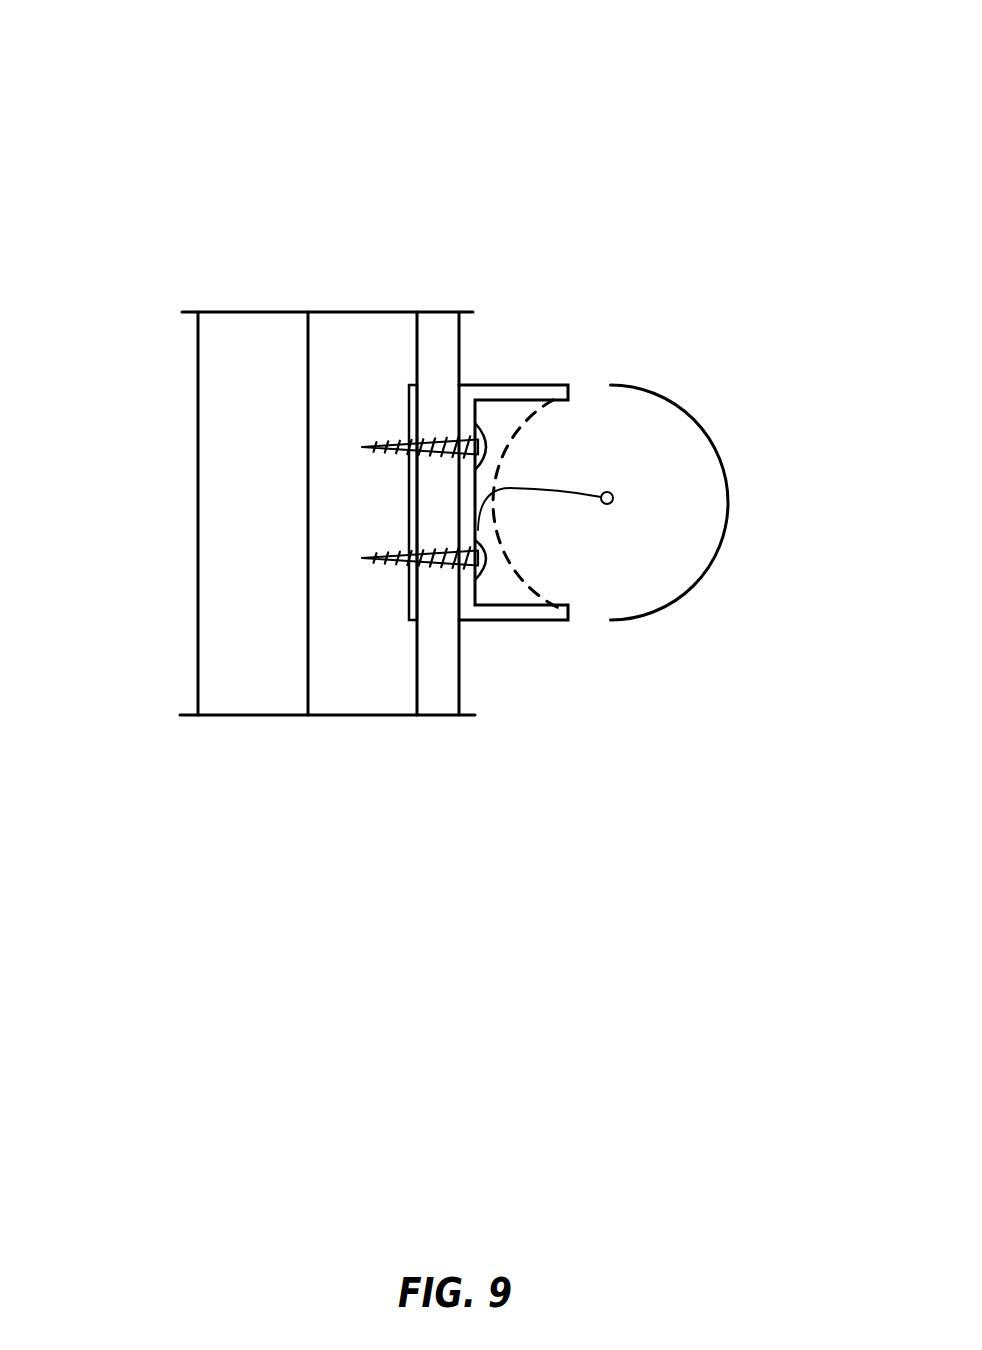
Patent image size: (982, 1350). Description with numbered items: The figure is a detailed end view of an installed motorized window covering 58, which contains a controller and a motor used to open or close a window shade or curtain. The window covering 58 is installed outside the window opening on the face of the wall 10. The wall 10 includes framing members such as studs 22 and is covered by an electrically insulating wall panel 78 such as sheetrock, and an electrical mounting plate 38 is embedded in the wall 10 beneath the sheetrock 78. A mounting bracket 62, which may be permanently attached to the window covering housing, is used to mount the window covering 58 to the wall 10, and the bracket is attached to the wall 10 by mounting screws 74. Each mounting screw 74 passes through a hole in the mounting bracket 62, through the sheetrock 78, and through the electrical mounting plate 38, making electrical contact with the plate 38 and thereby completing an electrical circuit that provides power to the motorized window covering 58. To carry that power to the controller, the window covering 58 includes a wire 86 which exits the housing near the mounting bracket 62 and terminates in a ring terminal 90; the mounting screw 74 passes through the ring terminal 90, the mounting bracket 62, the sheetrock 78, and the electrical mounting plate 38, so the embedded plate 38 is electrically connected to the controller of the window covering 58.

The wall 10 is at (314, 276).
The studs 22 is at (280, 518).
The electrical mounting plate 38 is at (416, 383).
The motorized window covering 58 is at (652, 456).
The mounting bracket 62 is at (519, 394).
The mounting screw 74 is at (453, 446).
The wall panel 78 is at (442, 692).
The wire 86 is at (548, 493).
The ring terminal 90 is at (475, 570).